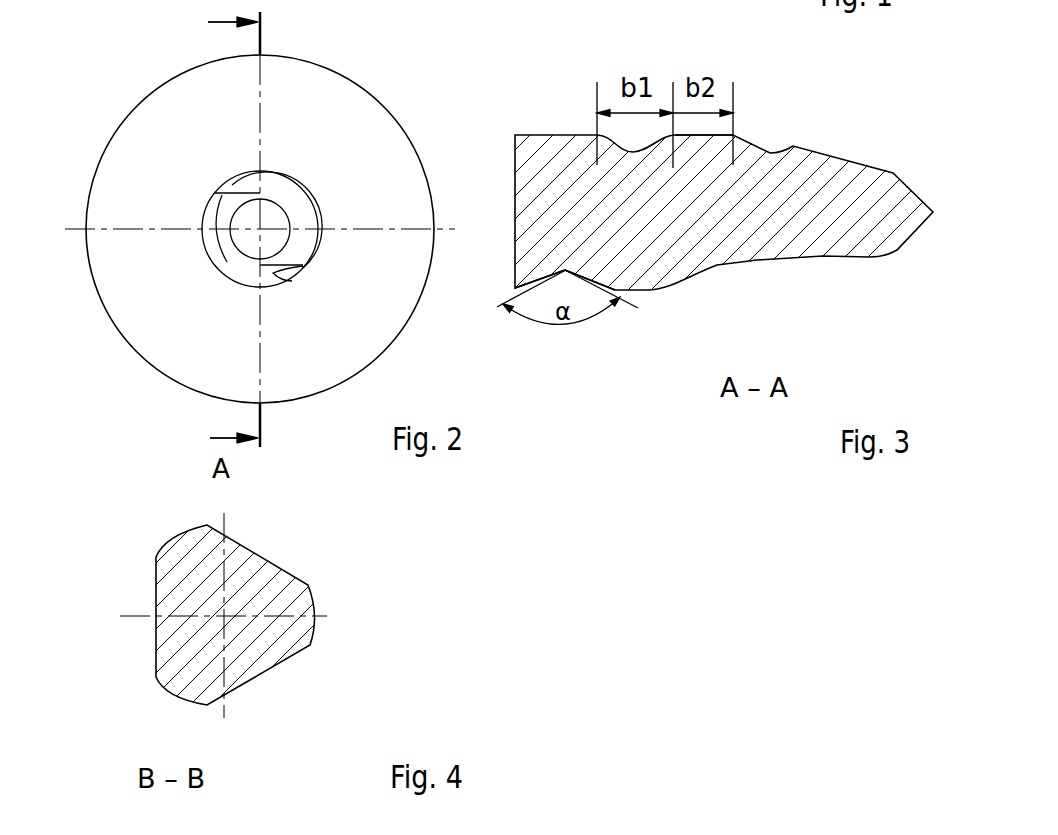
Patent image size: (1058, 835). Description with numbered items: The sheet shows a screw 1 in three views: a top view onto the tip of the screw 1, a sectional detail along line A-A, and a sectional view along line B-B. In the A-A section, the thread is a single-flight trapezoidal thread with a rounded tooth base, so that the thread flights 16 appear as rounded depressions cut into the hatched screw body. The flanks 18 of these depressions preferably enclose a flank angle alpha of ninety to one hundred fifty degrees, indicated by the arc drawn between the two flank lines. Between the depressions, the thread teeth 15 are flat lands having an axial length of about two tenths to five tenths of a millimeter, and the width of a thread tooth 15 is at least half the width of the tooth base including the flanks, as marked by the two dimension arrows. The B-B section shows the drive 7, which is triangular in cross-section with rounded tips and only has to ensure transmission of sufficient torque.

In FIG. 2, the screw 1 is at (112, 379).
In FIG. 4, the drive 7 is at (333, 576).
In FIG. 3, the thread tooth 15 is at (682, 135).
In FIG. 3, the thread flight 16 is at (543, 323).
In FIG. 3, the flank 18 is at (578, 318).